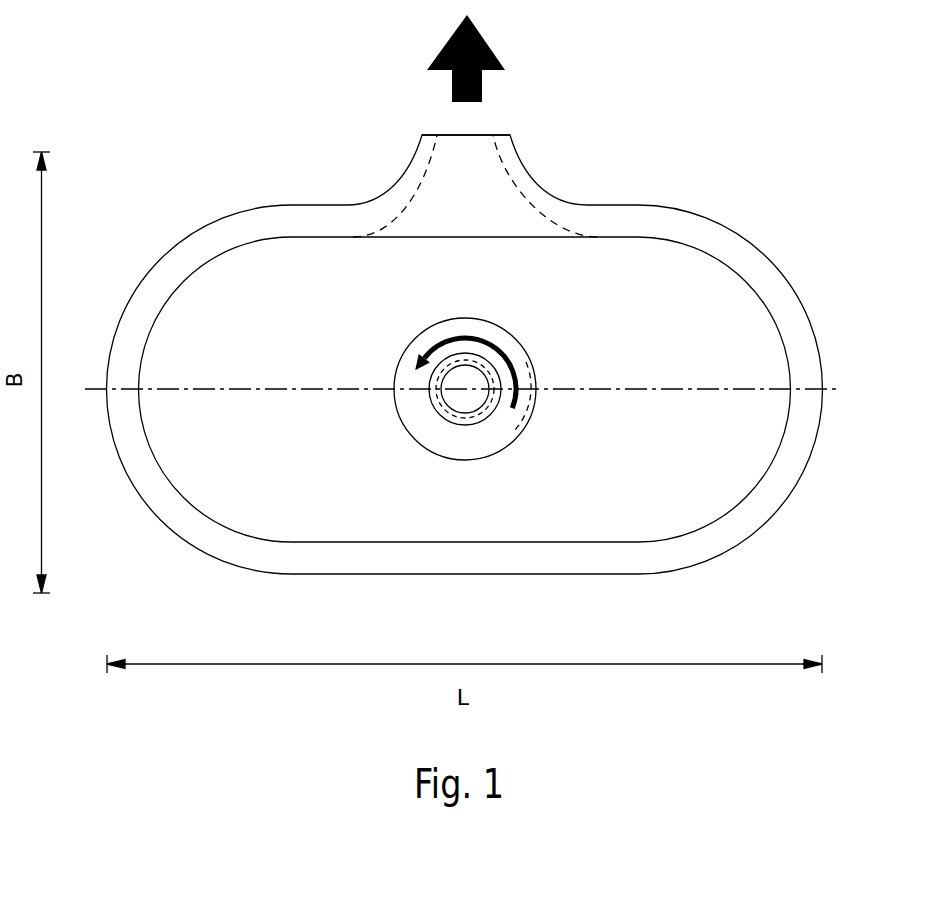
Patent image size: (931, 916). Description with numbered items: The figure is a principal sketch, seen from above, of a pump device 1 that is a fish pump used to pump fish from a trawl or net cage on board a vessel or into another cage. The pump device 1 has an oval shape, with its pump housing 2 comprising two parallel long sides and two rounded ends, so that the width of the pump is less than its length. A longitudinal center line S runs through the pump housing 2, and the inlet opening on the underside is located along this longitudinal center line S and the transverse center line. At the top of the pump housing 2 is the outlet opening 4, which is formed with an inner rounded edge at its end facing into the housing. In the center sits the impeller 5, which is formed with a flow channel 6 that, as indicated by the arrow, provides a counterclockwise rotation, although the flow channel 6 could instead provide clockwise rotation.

The pump device 1 is at (179, 194).
The pump housing 2 is at (707, 551).
The outlet opening 4 is at (476, 133).
The impeller 5 is at (392, 336).
The flow channel 6 is at (535, 419).
The longitudinal center line S is at (95, 421).